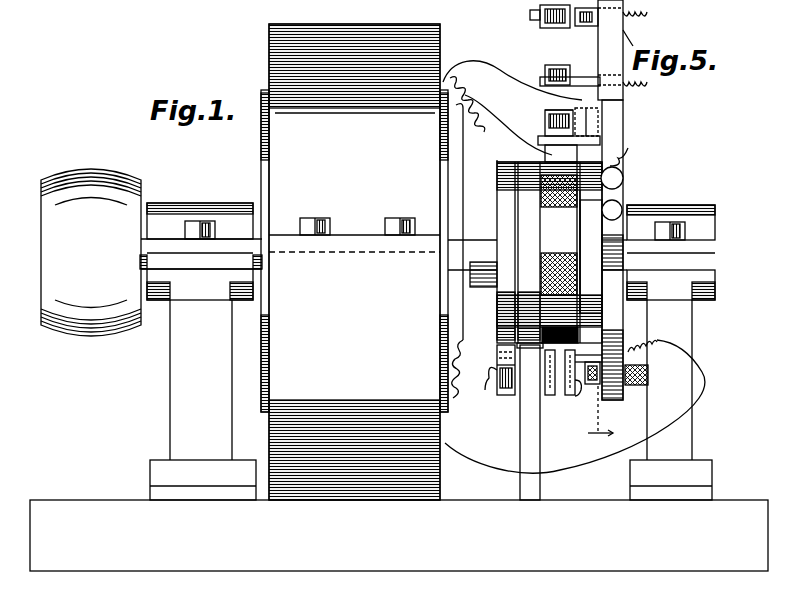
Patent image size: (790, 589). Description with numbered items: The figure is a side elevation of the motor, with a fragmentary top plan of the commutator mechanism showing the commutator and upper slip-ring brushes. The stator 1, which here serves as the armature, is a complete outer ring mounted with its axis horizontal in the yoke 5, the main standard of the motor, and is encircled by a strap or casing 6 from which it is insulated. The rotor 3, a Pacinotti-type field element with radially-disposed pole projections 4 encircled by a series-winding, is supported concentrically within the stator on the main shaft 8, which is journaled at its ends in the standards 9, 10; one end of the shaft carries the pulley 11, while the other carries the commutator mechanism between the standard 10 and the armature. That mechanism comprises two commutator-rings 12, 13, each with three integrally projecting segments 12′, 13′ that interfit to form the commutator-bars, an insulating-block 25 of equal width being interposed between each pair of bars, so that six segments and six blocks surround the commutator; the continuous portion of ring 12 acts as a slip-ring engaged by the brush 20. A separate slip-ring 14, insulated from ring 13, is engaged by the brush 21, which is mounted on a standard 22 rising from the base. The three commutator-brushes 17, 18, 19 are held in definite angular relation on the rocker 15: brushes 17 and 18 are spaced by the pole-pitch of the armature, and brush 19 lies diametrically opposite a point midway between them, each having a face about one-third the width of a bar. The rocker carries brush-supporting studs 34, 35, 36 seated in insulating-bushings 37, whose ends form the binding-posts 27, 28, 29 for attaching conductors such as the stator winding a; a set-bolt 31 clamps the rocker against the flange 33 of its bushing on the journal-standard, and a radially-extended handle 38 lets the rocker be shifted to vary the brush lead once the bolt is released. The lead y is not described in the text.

In FIG. 1, the stator 1 is at (268, 58).
In FIG. 1, the rotor 3 is at (512, 96).
In FIG. 1, the pole projections 4 is at (575, 406).
In FIG. 1, the yoke 5 is at (354, 309).
In FIG. 1, the strap or casing 6 is at (354, 205).
In FIG. 1, the main shaft 8 is at (258, 238).
In FIG. 1, the standard 9 is at (180, 213).
In FIG. 1, the standard 10 is at (672, 215).
In FIG. 1, the pulley 11 is at (91, 252).
In FIG. 1, the commutator-ring 12 is at (537, 261).
In FIG. 1, the segments 12′ is at (567, 303).
In FIG. 1, the commutator-ring 13 is at (577, 190).
In FIG. 1, the segments 13′ is at (582, 255).
In FIG. 1, the slip-ring 14 is at (498, 161).
In FIG. 1, the rocker 15 is at (624, 134).
In FIG. 5, the rocker 15 is at (611, 50).
In FIG. 1, the commutator-brush 17 is at (556, 115).
In FIG. 5, the commutator-brush 17 is at (556, 28).
In FIG. 1, the commutator-brush 18 is at (545, 118).
In FIG. 5, the commutator-brush 18 is at (553, 28).
In FIG. 1, the commutator-brush 19 is at (567, 386).
In FIG. 1, the brush 20 is at (586, 112).
In FIG. 5, the brush 20 is at (586, 27).
In FIG. 1, the brush 21 is at (508, 396).
In FIG. 1, the standard 22 is at (541, 458).
In FIG. 1, the insulating-block 25 is at (497, 182).
In FIG. 5, the binding-post 27 is at (646, 18).
In FIG. 1, the binding-post 28 is at (650, 145).
In FIG. 5, the binding-post 28 is at (648, 82).
In FIG. 1, the binding-post 29 is at (633, 358).
In FIG. 1, the set-bolt 31 is at (612, 388).
In FIG. 1, the flange 33 is at (649, 376).
In FIG. 5, the brush-supporting stud 34 is at (530, 15).
In FIG. 1, the brush-supporting stud 35 is at (545, 132).
In FIG. 5, the brush-supporting stud 35 is at (570, 78).
In FIG. 1, the brush-supporting stud 36 is at (588, 392).
In FIG. 5, the insulating-bushing 37 is at (637, 42).
In FIG. 1, the handle 38 is at (623, 180).
In FIG. 1, the winding a is at (466, 251).
In FIG. 1, the wire y is at (508, 253).